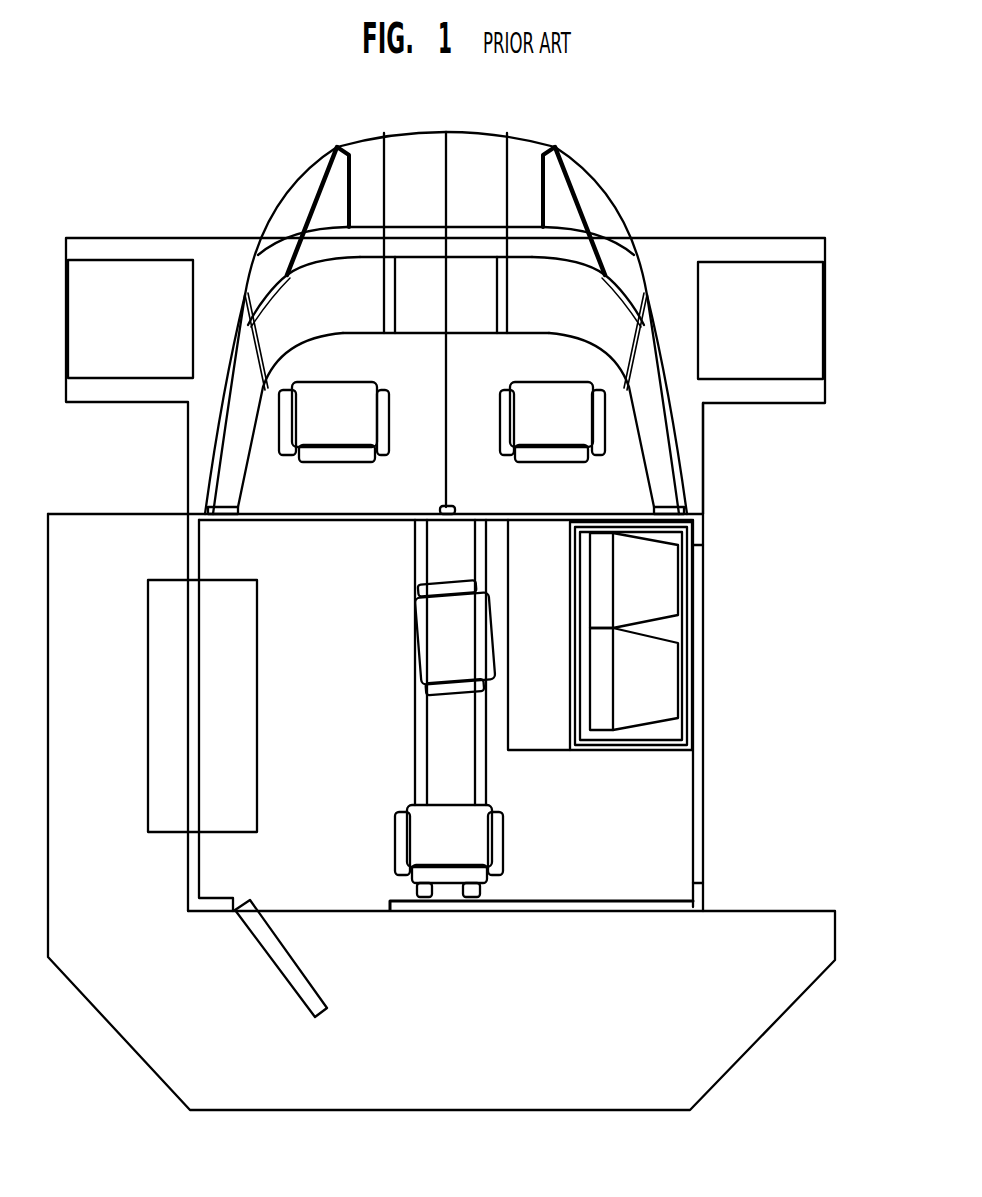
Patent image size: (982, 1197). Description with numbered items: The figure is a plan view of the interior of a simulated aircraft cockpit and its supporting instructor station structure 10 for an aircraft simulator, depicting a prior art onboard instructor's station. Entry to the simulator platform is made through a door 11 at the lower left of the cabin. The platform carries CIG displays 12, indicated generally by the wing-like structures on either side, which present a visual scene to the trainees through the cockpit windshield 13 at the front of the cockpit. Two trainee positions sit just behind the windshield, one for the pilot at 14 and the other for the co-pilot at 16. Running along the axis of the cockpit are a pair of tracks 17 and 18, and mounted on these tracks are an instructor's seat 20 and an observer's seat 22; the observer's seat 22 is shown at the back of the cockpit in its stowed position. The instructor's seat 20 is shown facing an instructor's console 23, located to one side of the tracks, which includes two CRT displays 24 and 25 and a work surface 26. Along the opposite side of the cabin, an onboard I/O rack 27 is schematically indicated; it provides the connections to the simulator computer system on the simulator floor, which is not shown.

The instructor station structure 10 is at (711, 793).
The door 11 is at (280, 972).
The CIG displays 12 is at (118, 238).
The cockpit windshield 13 is at (554, 307).
The pilot trainee position 14 is at (528, 382).
The co-pilot trainee position 16 is at (363, 382).
The track 17 is at (415, 735).
The track 18 is at (488, 777).
The instructor's seat 20 is at (417, 625).
The observer's seat 22 is at (398, 852).
The instructor's console 23 is at (575, 754).
The CRT display 24 is at (649, 590).
The CRT display 25 is at (649, 690).
The work surface 26 is at (548, 645).
The onboard I/O rack 27 is at (257, 690).